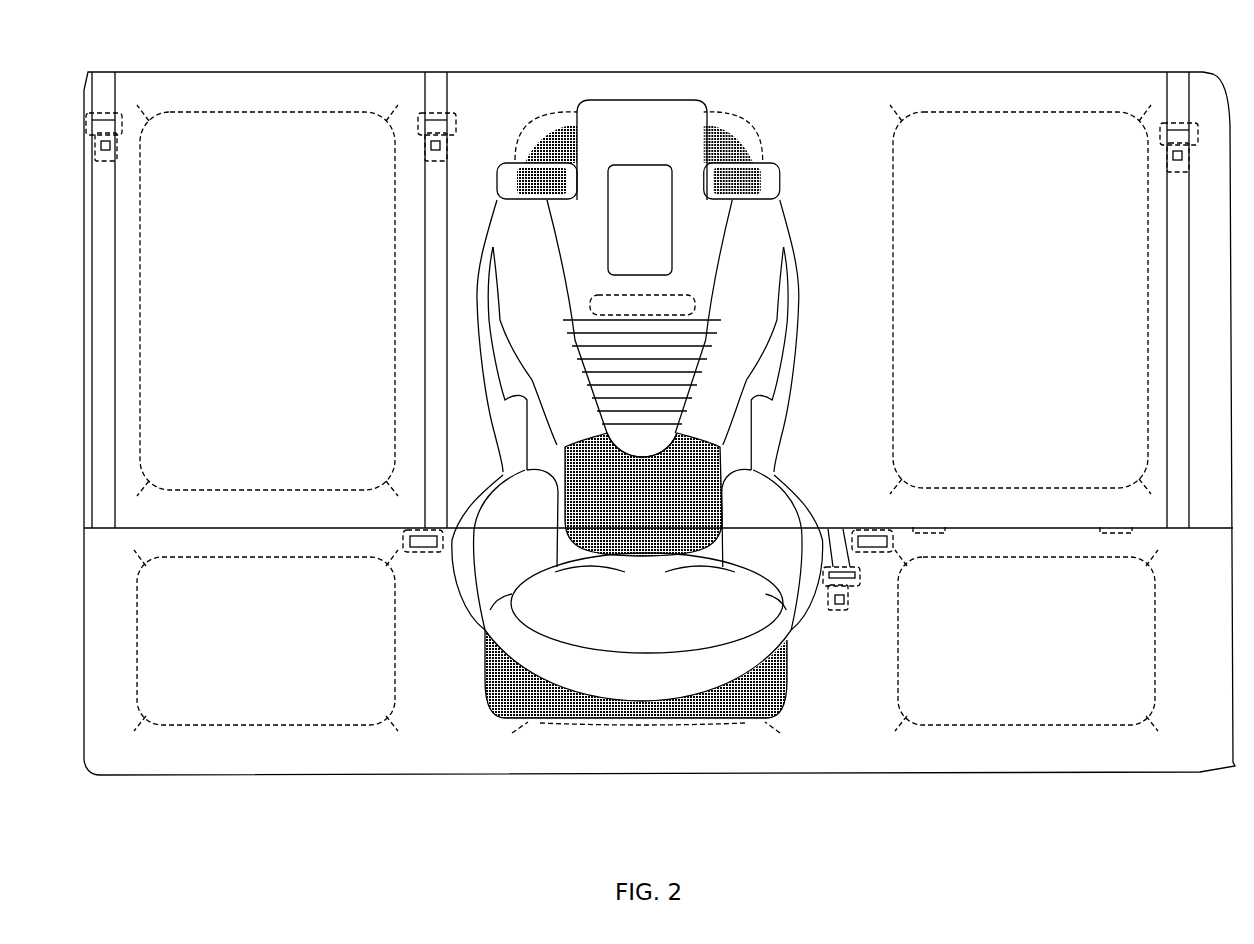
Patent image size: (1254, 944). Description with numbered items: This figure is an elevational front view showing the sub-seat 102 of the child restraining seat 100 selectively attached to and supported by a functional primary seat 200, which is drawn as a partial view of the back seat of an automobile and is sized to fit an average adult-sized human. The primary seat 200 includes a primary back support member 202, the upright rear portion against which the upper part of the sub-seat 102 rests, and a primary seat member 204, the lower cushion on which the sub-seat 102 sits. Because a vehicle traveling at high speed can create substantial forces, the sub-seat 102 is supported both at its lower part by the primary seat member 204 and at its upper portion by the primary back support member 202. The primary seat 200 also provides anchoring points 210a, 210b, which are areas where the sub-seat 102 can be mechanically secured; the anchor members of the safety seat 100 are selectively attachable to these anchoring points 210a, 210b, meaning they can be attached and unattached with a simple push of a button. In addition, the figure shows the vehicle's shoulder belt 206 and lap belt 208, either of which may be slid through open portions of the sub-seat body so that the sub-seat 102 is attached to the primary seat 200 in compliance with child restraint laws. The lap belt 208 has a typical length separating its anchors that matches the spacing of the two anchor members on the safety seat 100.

The child restraining seat 100 is at (598, 476).
The sub-seat 102 is at (501, 470).
The primary seat 200 is at (826, 101).
The primary back support member 202 is at (528, 124).
The primary seat member 204 is at (447, 720).
The shoulder belt 206 is at (430, 235).
The lap belt 208 is at (840, 612).
The anchoring point 210a is at (946, 528).
The anchoring point 210b is at (1100, 528).